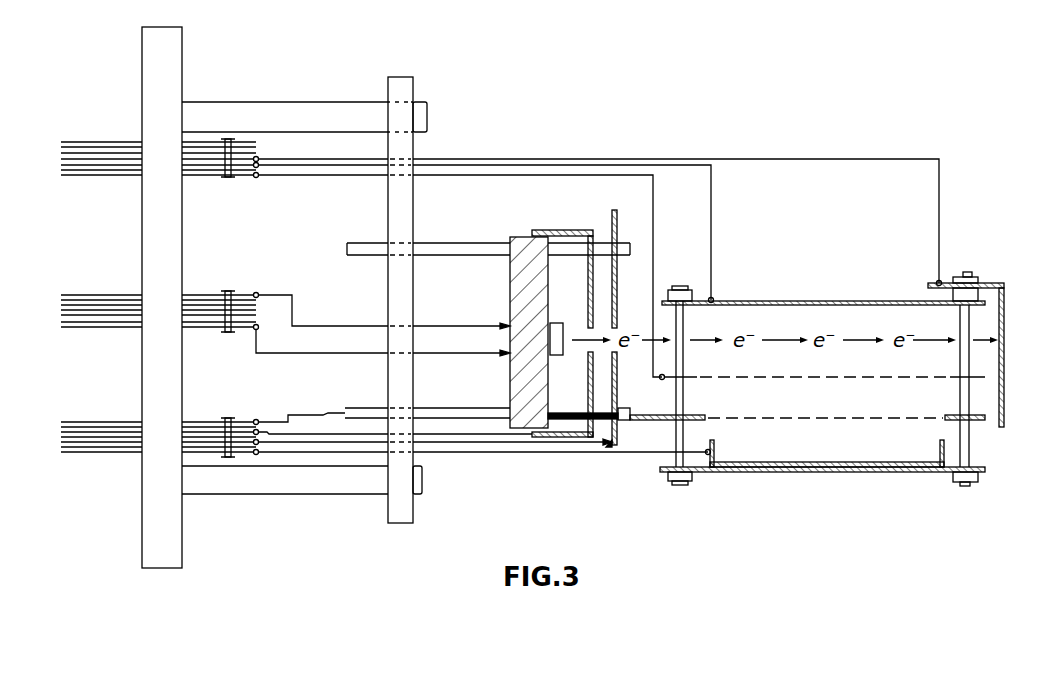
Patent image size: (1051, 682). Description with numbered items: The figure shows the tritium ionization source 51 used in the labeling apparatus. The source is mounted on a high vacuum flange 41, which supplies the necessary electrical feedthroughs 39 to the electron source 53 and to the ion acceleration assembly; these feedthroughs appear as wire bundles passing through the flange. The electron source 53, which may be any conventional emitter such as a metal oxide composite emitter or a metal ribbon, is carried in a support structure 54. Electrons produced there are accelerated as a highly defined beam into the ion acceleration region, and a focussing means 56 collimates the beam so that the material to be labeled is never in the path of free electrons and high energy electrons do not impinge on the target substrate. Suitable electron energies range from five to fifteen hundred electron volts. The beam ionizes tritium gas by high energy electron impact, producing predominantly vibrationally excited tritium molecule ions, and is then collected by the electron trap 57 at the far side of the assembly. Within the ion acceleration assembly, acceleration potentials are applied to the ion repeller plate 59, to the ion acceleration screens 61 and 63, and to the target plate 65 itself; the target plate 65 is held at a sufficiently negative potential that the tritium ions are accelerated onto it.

The electrical feedthroughs 39 is at (79, 176).
The high vacuum flange 41 is at (142, 505).
The tritium ionization source 51 is at (585, 222).
The electron source 53 is at (556, 320).
The support structure 54 is at (435, 248).
The focussing means 56 is at (596, 292).
The electron trap 57 is at (1004, 330).
The ion repeller plate 59 is at (811, 300).
The ion acceleration screen 61 is at (916, 379).
The ion acceleration screen 63 is at (784, 421).
The target plate 65 is at (880, 467).